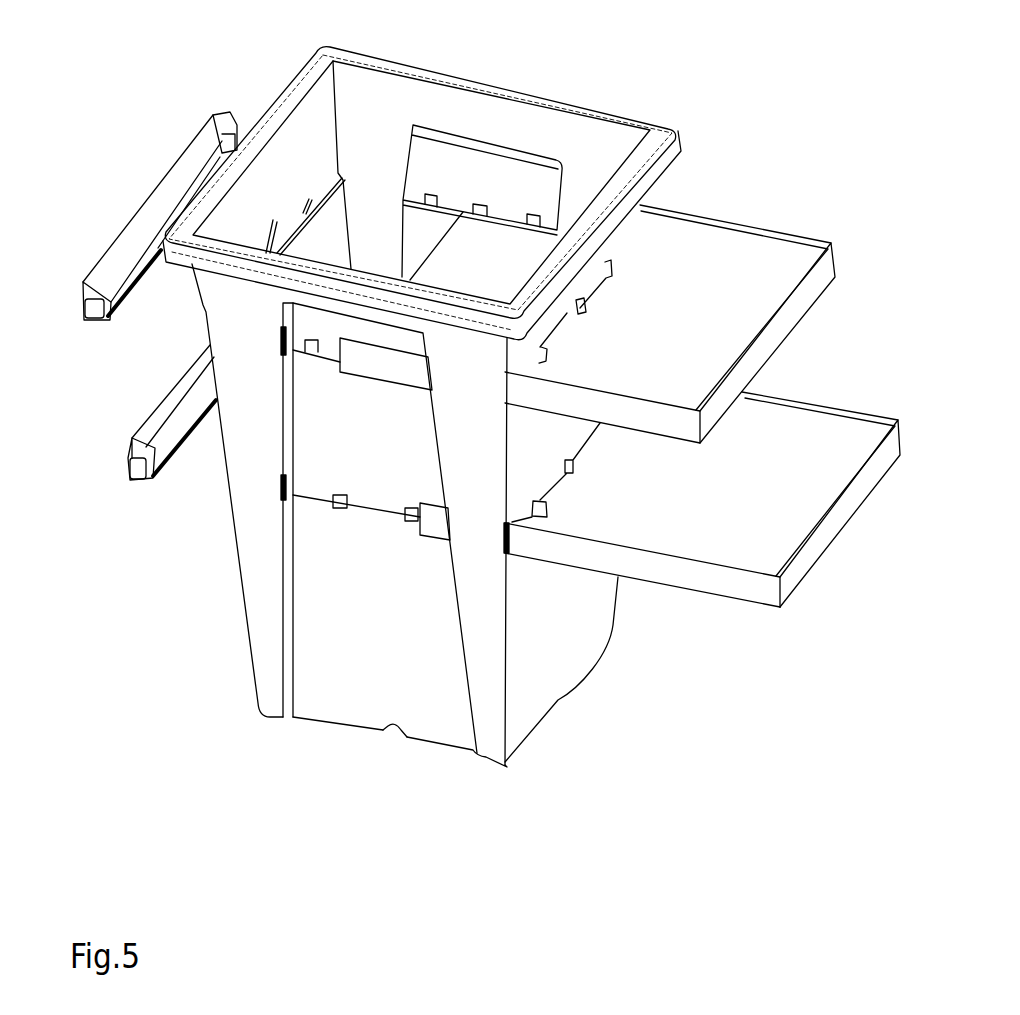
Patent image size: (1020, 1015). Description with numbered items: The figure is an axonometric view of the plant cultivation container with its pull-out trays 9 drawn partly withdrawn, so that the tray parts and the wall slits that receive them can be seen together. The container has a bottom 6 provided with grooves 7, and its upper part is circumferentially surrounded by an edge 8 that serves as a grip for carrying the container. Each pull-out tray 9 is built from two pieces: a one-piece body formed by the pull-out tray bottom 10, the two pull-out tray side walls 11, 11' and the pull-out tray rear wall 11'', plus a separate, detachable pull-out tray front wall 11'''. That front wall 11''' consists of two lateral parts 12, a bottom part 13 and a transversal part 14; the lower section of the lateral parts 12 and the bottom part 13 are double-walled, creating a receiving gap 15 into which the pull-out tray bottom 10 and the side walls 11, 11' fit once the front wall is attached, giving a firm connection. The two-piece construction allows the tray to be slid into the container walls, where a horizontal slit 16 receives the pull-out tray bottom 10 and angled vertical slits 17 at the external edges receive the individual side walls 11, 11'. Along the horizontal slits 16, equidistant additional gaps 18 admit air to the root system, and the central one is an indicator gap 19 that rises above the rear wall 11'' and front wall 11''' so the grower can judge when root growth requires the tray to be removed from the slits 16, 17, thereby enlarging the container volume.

The bottom 6 is at (440, 748).
The grooves 7 is at (394, 729).
The edge 8 is at (527, 94).
The pull-out tray 9 is at (781, 630).
The pull-out tray bottom 10 is at (775, 463).
The pull-out tray side wall 11 is at (659, 635).
The pull-out tray side wall 11' is at (692, 324).
The pull-out tray rear wall 11'' is at (849, 535).
The pull-out tray front wall 11''' is at (120, 410).
The lateral parts 12 is at (228, 126).
The bottom part 13 is at (127, 276).
The transversal part 14 is at (117, 231).
The receiving gap 15 is at (110, 318).
The horizontal slit 16 is at (368, 513).
The vertical slit 17 is at (282, 495).
The additional gaps 18 is at (338, 505).
The indicator gap 19 is at (265, 232).